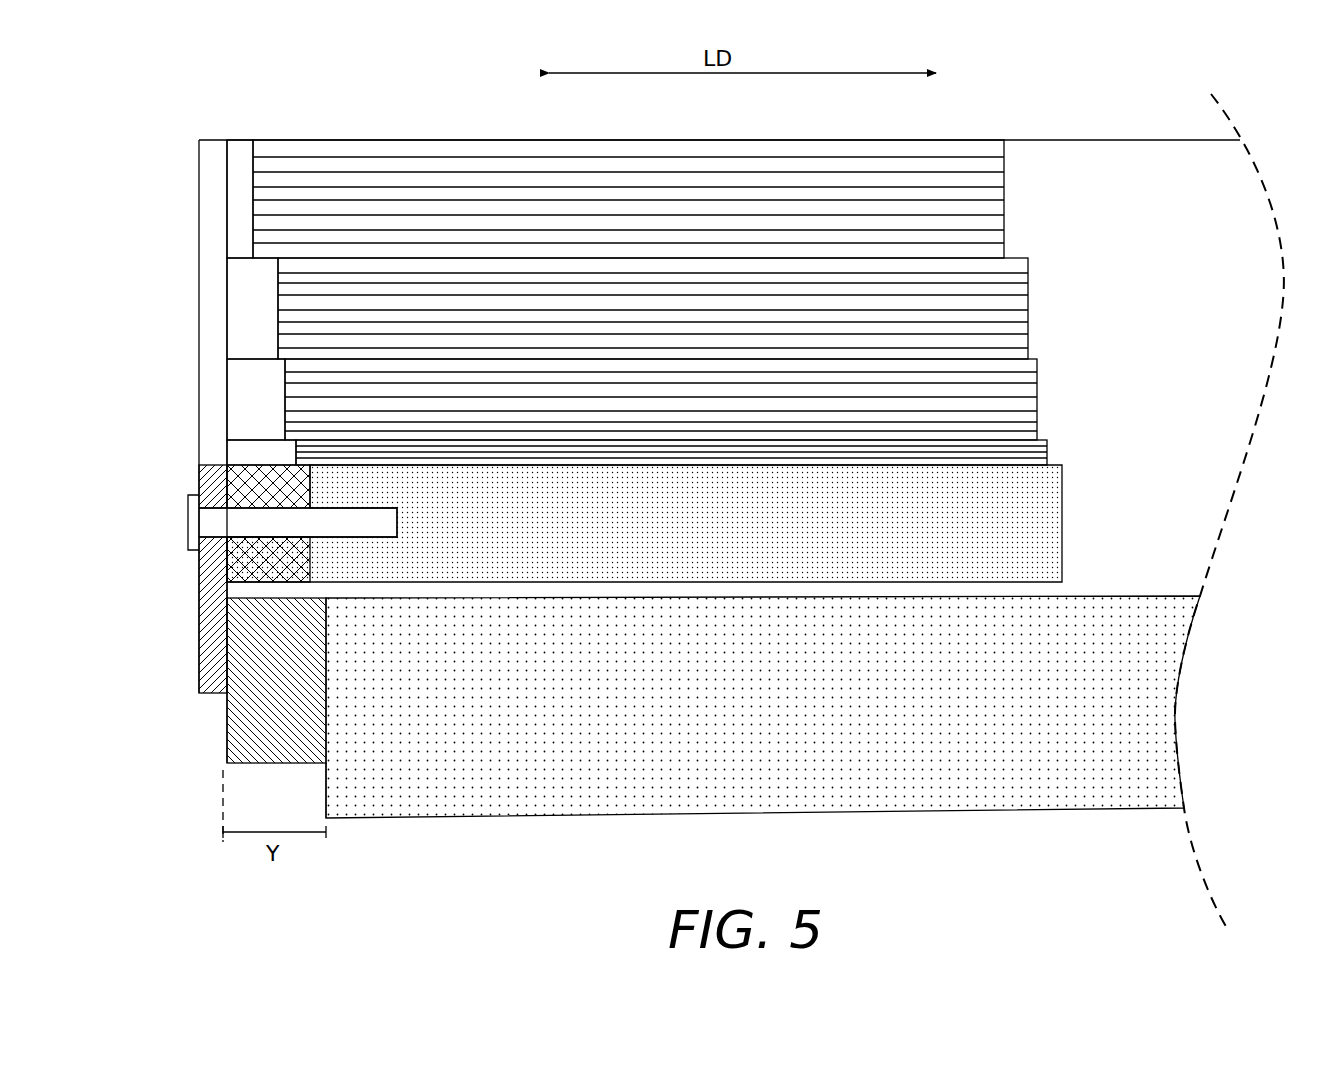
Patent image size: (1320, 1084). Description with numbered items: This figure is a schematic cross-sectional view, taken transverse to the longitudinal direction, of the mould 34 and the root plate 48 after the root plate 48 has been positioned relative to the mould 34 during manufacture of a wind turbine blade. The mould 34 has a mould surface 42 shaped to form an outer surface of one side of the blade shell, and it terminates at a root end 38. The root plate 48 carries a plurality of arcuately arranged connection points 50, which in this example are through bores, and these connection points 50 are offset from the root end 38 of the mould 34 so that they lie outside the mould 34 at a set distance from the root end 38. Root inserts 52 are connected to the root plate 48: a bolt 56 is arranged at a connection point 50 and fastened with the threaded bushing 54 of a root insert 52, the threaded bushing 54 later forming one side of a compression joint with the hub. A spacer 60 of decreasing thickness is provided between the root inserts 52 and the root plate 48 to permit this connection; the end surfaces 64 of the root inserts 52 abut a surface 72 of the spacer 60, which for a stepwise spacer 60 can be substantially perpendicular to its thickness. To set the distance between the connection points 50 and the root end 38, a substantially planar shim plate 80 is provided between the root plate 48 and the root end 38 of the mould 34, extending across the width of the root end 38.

The mould 34 is at (1104, 172).
The root end 38 is at (338, 789).
The mould surface 42 is at (1090, 595).
The root plate 48 is at (198, 668).
The connection points 50 is at (221, 528).
The root inserts 52 is at (1013, 290).
The threaded bushing 54 is at (380, 505).
The bolt 56 is at (203, 520).
The spacer 60 is at (237, 307).
The end surfaces 64 is at (322, 563).
The surface 72 is at (298, 480).
The shim plate 80 is at (236, 723).